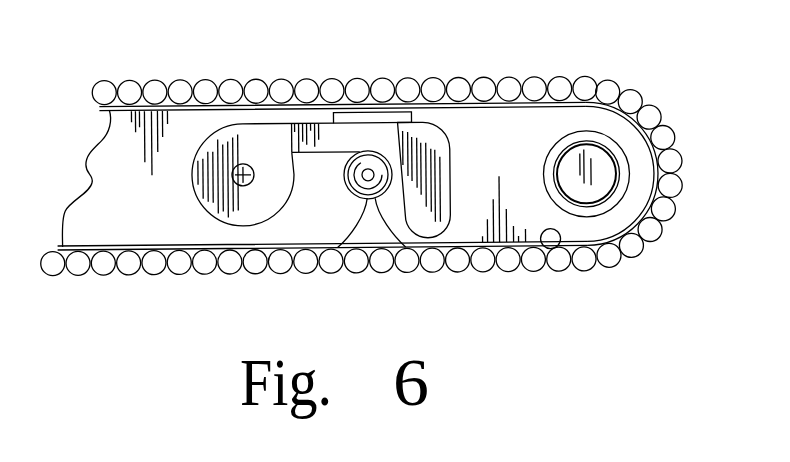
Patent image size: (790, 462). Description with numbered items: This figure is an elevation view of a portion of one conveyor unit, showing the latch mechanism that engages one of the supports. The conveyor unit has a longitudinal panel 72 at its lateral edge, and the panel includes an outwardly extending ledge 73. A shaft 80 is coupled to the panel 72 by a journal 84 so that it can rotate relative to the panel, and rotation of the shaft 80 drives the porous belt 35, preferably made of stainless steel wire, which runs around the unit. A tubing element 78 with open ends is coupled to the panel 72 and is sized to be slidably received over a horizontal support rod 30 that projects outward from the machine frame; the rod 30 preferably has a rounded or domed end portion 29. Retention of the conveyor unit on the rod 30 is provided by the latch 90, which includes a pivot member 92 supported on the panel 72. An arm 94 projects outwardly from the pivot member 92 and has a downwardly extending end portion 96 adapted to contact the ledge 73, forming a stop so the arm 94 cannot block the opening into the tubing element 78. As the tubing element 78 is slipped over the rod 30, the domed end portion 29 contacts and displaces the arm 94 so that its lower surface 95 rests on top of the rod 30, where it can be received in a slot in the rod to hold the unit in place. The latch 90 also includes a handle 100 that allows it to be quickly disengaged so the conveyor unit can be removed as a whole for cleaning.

The porous belt 35 is at (137, 89).
The latch 90 is at (247, 136).
The pivot member 92 is at (232, 176).
The arm 94 is at (327, 131).
The lower surface 95 is at (333, 153).
The horizontal rod 30 is at (360, 151).
The handle 100 is at (390, 112).
The downwardly extending end portion 96 is at (440, 152).
The longitudinal panel 72 is at (497, 111).
The shaft 80 is at (607, 169).
The journal 84 is at (617, 197).
The ledge 73 is at (546, 251).
The tubing element 78 is at (337, 248).
The domed end portion 29 is at (405, 248).